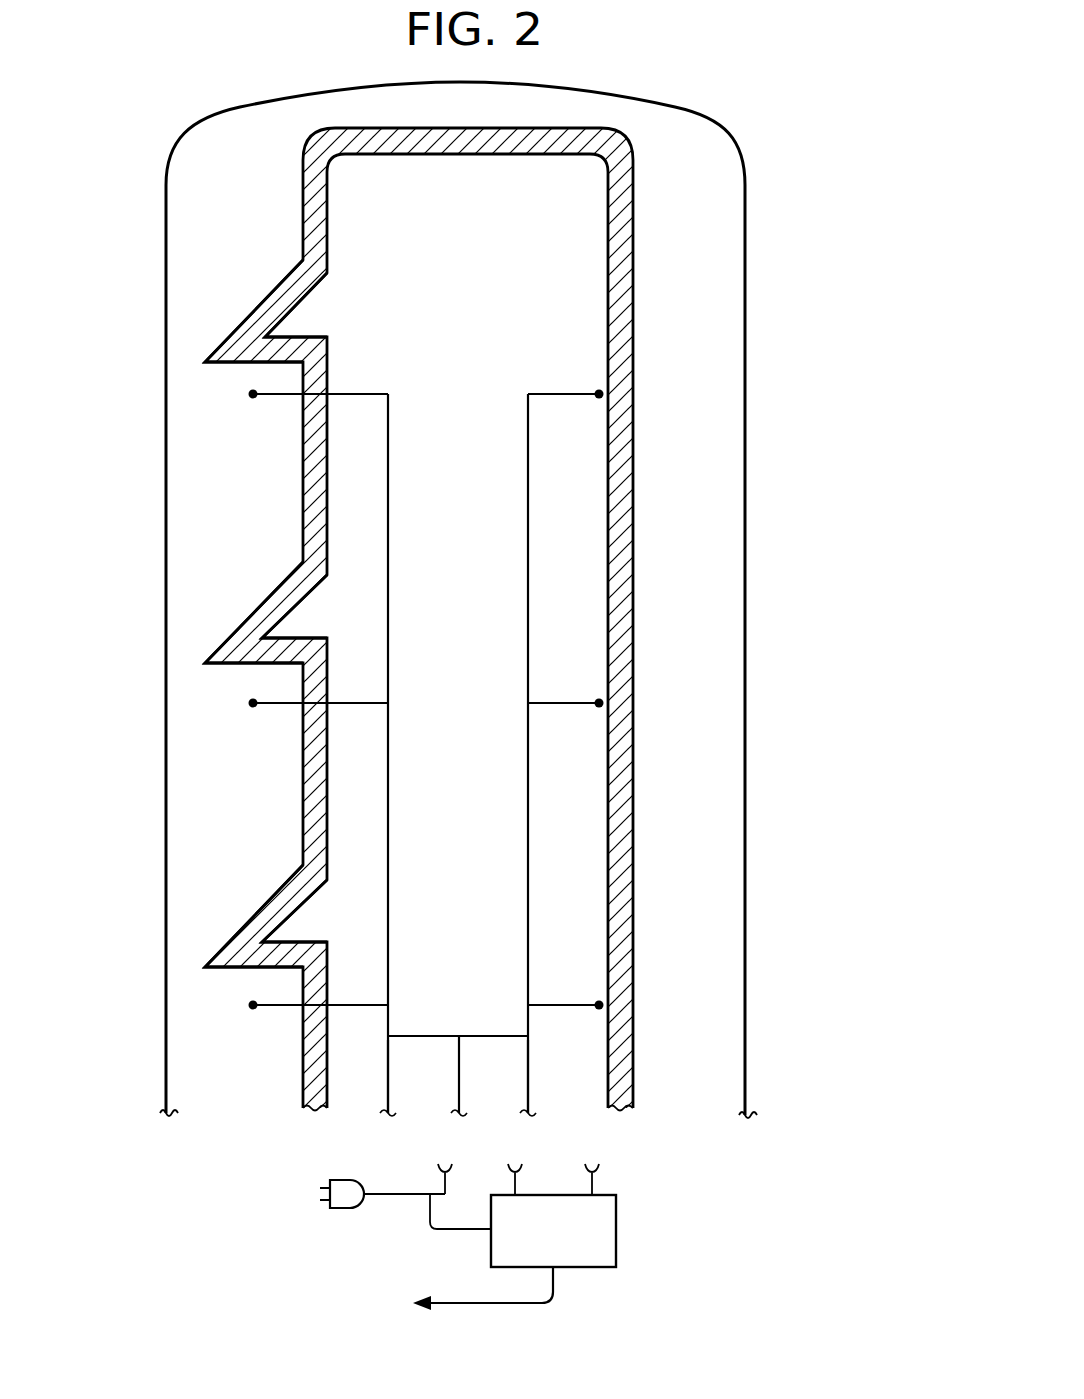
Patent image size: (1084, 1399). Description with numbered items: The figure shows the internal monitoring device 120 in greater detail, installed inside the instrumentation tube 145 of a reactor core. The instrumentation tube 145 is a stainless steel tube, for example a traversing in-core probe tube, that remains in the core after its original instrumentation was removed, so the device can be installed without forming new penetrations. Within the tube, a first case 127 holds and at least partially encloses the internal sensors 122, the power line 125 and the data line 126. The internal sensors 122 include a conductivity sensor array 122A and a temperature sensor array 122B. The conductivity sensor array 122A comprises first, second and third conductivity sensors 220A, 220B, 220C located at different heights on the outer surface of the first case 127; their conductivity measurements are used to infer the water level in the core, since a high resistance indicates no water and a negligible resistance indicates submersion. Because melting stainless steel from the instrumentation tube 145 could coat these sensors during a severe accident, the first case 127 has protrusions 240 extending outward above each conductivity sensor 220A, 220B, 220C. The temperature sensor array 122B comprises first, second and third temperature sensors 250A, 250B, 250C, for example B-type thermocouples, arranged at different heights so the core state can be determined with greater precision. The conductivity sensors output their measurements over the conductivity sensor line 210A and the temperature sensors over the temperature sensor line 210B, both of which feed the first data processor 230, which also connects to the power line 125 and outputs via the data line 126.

The internal monitoring device 120 is at (857, 188).
The instrumentation tube 145 is at (760, 332).
The first case 127 is at (650, 975).
The protrusions 240 is at (248, 316).
The internal sensors 122 is at (572, 235).
The conductivity sensor array 122A is at (363, 373).
The temperature sensor array 122B is at (552, 372).
The first conductivity sensor 220A is at (251, 398).
The second conductivity sensor 220B is at (253, 707).
The third conductivity sensor 220C is at (254, 1009).
The first temperature sensor 250A is at (597, 398).
The second temperature sensor 250B is at (597, 707).
The third temperature sensor 250C is at (597, 1009).
The conductivity sensor line 210A is at (385, 1082).
The temperature sensor line 210B is at (530, 1082).
The power line 125 is at (460, 1095).
The first data processor 230 is at (617, 1228).
The data line 126 is at (422, 1298).